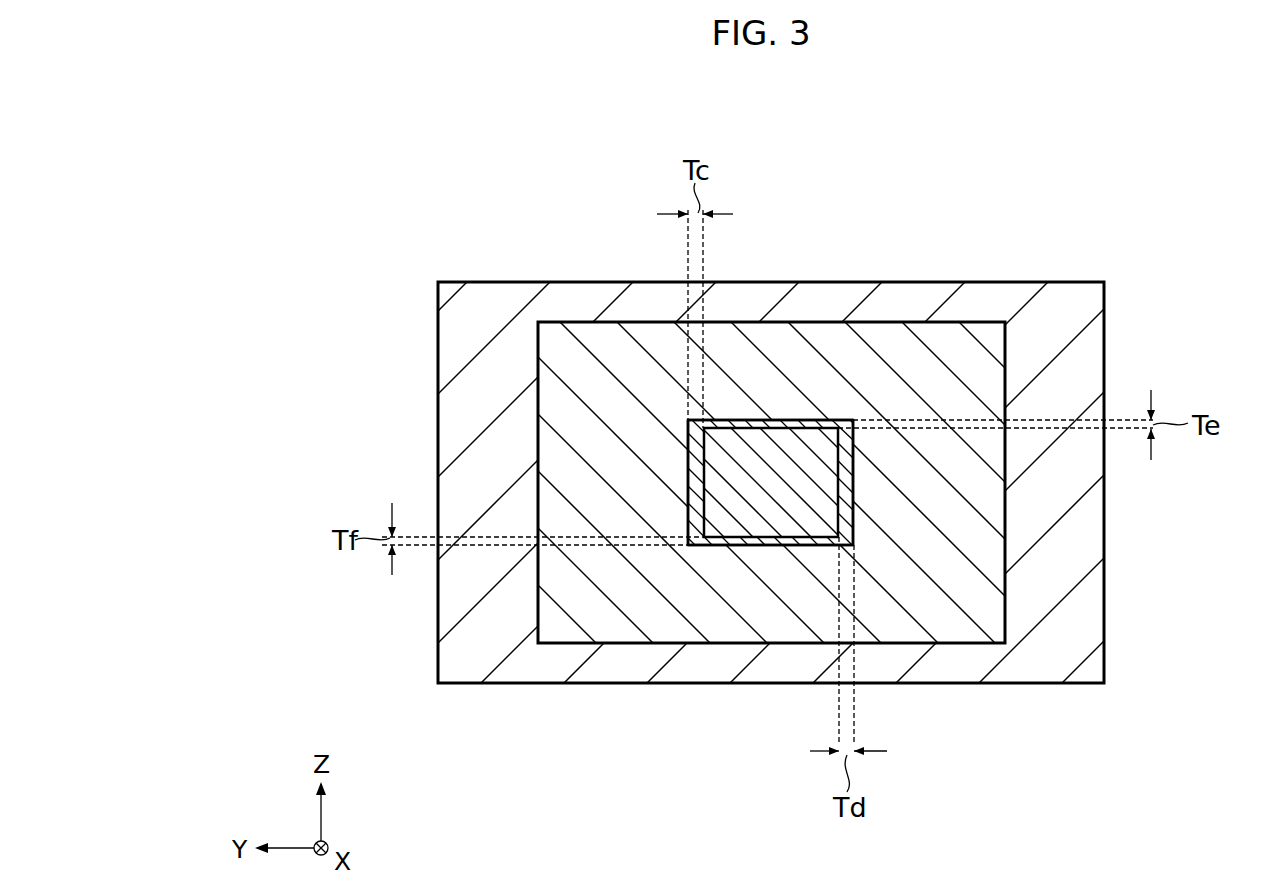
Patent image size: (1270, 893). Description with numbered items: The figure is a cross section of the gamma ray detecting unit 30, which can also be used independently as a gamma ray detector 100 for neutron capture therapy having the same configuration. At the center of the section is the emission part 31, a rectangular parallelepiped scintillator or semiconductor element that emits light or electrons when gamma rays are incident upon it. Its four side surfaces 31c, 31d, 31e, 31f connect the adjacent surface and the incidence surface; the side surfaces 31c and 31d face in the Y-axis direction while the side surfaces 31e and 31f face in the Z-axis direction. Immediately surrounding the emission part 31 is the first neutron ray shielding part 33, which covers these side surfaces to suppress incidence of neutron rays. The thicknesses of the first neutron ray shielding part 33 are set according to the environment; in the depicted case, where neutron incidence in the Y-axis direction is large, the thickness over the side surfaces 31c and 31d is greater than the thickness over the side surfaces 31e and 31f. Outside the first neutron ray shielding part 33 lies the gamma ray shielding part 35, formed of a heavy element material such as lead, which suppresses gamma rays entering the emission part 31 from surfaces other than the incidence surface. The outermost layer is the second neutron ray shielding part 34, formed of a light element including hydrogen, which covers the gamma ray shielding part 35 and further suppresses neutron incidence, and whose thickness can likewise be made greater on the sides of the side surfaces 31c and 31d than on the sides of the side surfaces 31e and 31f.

The gamma ray detecting unit 30 is at (1134, 173).
The gamma ray detector for neutron capture therapy 100 is at (852, 390).
The emission part 31 is at (813, 447).
The side surface 31c is at (688, 477).
The side surface 31d is at (855, 477).
The side surface 31e is at (776, 420).
The side surface 31f is at (785, 545).
The first neutron ray shielding part 33 is at (723, 545).
The second neutron ray shielding part 34 is at (560, 665).
The gamma ray shielding part 35 is at (597, 340).